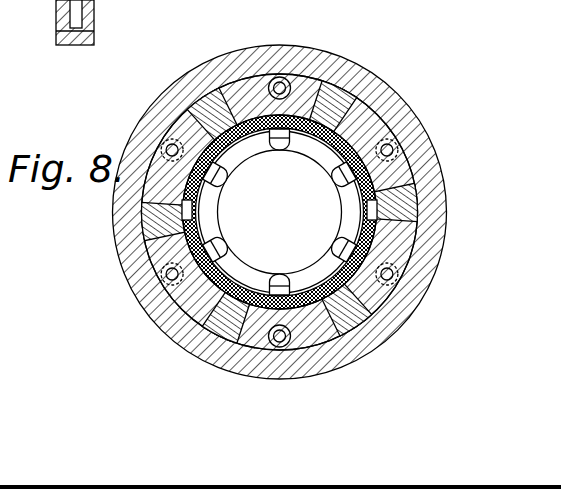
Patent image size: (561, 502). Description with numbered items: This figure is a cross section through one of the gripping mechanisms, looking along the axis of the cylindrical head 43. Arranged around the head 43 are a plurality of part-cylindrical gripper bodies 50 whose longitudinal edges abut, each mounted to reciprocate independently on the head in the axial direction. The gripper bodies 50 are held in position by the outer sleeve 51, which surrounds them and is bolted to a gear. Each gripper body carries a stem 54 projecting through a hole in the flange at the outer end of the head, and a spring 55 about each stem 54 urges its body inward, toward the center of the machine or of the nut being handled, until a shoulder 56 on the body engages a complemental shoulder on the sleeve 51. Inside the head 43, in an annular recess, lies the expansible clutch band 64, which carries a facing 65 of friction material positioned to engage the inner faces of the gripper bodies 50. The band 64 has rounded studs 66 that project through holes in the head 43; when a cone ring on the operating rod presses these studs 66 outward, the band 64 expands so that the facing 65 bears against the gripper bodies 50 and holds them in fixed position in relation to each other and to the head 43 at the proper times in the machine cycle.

The head 43 is at (263, 253).
The gripper bodies 50 is at (357, 110).
The outer sleeve 51 is at (405, 130).
The stems 54 is at (284, 77).
The springs 55 is at (271, 79).
The shoulders 56 is at (104, 22).
The expansible clutch band 64 is at (416, 181).
The facing 65 is at (378, 197).
The rounded studs 66 is at (277, 278).